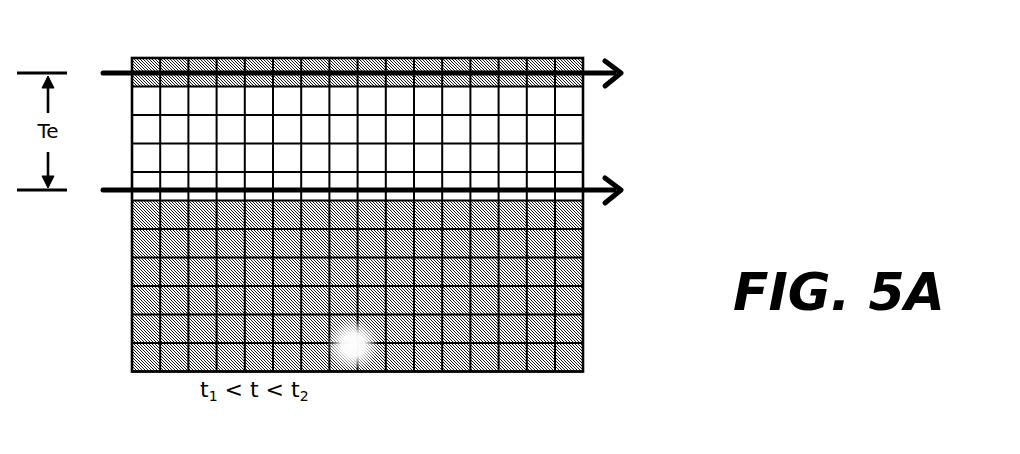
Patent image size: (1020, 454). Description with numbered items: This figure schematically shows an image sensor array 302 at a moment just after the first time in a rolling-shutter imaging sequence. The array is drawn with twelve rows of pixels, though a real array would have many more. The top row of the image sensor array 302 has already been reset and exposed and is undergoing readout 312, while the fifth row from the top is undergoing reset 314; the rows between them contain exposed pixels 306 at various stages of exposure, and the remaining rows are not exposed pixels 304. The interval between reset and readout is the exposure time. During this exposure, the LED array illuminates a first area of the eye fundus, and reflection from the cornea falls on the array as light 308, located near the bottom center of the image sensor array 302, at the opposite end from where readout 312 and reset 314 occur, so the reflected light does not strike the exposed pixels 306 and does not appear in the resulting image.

The image sensor array 302 is at (535, 58).
The not exposed pixels 304 is at (570, 272).
The exposed pixels 306 is at (572, 138).
The light reflection 308 is at (372, 360).
The readout 312 is at (625, 79).
The reset 314 is at (625, 194).